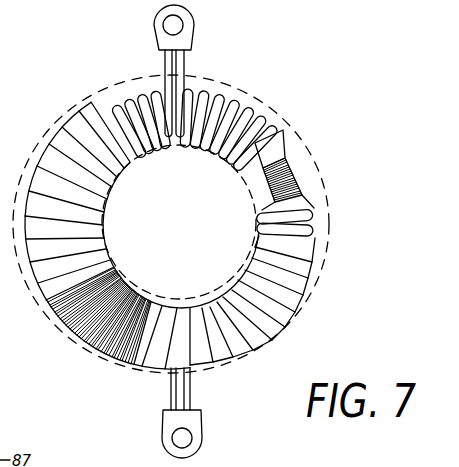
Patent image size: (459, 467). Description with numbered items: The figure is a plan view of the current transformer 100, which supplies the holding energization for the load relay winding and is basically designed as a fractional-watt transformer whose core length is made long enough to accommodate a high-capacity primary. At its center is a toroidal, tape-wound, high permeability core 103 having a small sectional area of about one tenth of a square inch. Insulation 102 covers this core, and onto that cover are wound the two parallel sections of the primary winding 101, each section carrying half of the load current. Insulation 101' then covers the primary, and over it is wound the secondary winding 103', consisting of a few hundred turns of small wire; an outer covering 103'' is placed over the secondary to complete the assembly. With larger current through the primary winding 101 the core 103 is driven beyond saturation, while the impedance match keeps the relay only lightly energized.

The current transformer 100 is at (362, 72).
The primary winding 101 is at (233, 146).
The insulation 101' is at (283, 306).
The insulation 102 is at (276, 152).
The toroidal core 103 is at (318, 178).
The secondary winding 103' is at (100, 337).
The outer covering 103'' is at (75, 192).